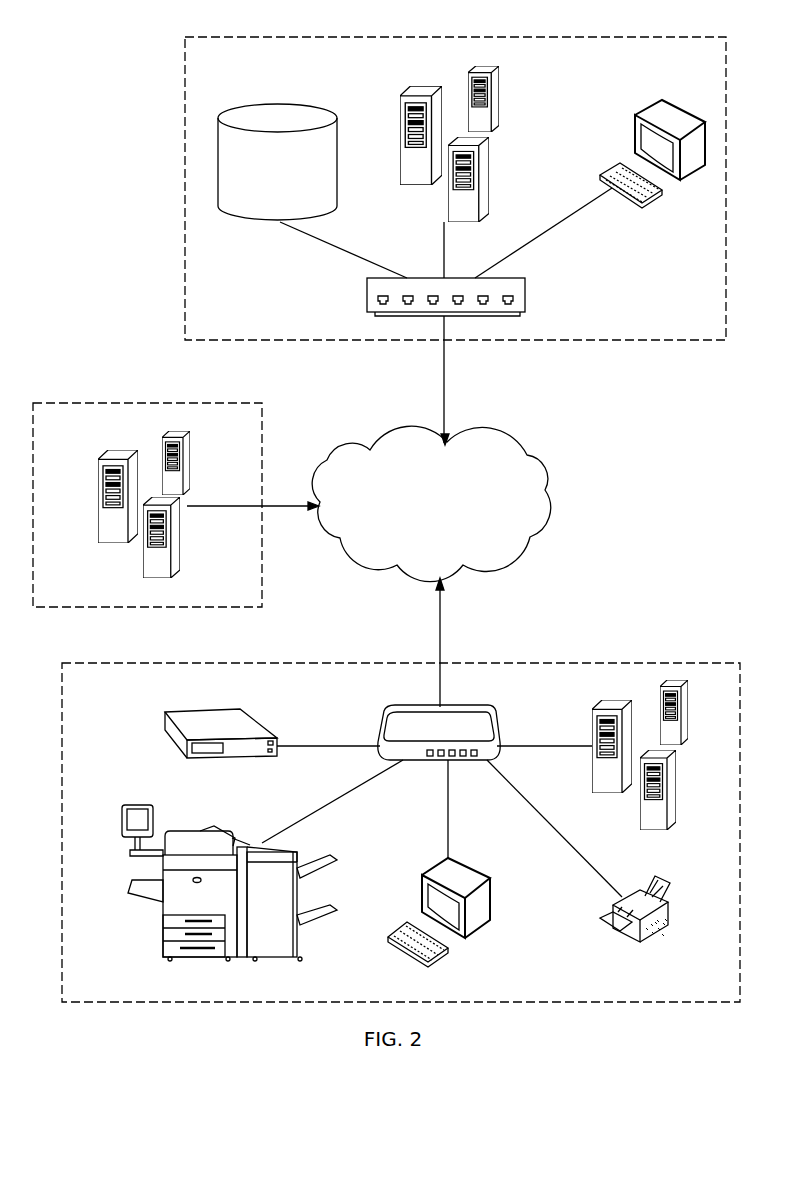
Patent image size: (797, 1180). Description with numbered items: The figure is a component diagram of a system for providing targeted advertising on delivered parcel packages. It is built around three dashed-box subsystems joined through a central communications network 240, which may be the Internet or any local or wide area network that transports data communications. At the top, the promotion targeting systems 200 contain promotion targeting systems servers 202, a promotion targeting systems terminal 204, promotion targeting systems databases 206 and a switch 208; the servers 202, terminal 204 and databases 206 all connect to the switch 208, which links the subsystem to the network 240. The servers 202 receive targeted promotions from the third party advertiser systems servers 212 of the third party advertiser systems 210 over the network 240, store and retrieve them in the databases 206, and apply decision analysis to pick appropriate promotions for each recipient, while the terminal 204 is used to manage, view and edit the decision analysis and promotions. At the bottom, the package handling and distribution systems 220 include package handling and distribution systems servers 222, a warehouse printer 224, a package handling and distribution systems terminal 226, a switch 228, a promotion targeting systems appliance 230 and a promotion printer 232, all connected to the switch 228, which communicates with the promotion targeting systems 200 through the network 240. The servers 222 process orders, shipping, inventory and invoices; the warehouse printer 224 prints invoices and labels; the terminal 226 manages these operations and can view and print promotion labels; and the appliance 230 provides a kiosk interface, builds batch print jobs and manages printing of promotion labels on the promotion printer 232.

The promotion targeting systems 200 is at (172, 50).
The promotion targeting systems servers 202 is at (494, 64).
The promotion targeting systems terminal 204 is at (647, 102).
The promotion targeting systems databases 206 is at (263, 100).
The switch 208 is at (517, 278).
The third party advertiser systems 210 is at (212, 402).
The third party advertiser systems servers 212 is at (127, 447).
The package handling and distribution systems 220 is at (587, 660).
The package handling and distribution systems servers 222 is at (690, 753).
The warehouse printer 224 is at (672, 918).
The package handling and distribution systems terminal 226 is at (493, 925).
The switch 228 is at (405, 700).
The promotion targeting systems appliance 230 is at (177, 707).
The promotion printer 232 is at (153, 920).
The communications network 240 is at (540, 452).